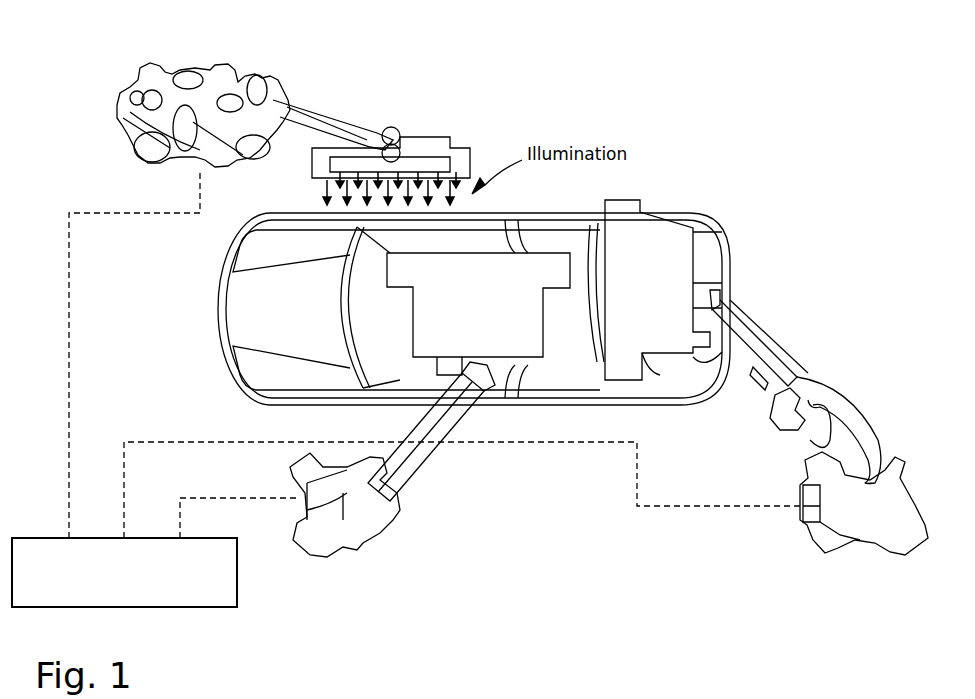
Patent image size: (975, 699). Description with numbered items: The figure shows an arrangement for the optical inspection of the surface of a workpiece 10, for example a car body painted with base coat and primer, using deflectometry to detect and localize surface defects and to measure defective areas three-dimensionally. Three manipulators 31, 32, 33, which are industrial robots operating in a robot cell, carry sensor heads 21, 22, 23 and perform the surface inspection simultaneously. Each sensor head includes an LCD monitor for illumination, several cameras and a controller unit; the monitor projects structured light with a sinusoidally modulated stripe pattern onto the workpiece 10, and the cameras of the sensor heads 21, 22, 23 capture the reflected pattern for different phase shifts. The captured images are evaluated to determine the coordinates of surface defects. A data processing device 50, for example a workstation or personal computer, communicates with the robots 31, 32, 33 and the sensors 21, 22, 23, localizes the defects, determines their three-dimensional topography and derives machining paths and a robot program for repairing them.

The workpiece 10 is at (218, 313).
The sensor head 21 is at (477, 118).
The sensor head 22 is at (657, 238).
The sensor head 23 is at (478, 314).
The manipulator 31 is at (188, 70).
The manipulator 32 is at (800, 505).
The manipulator 33 is at (395, 540).
The data processing device 50 is at (406, 388).